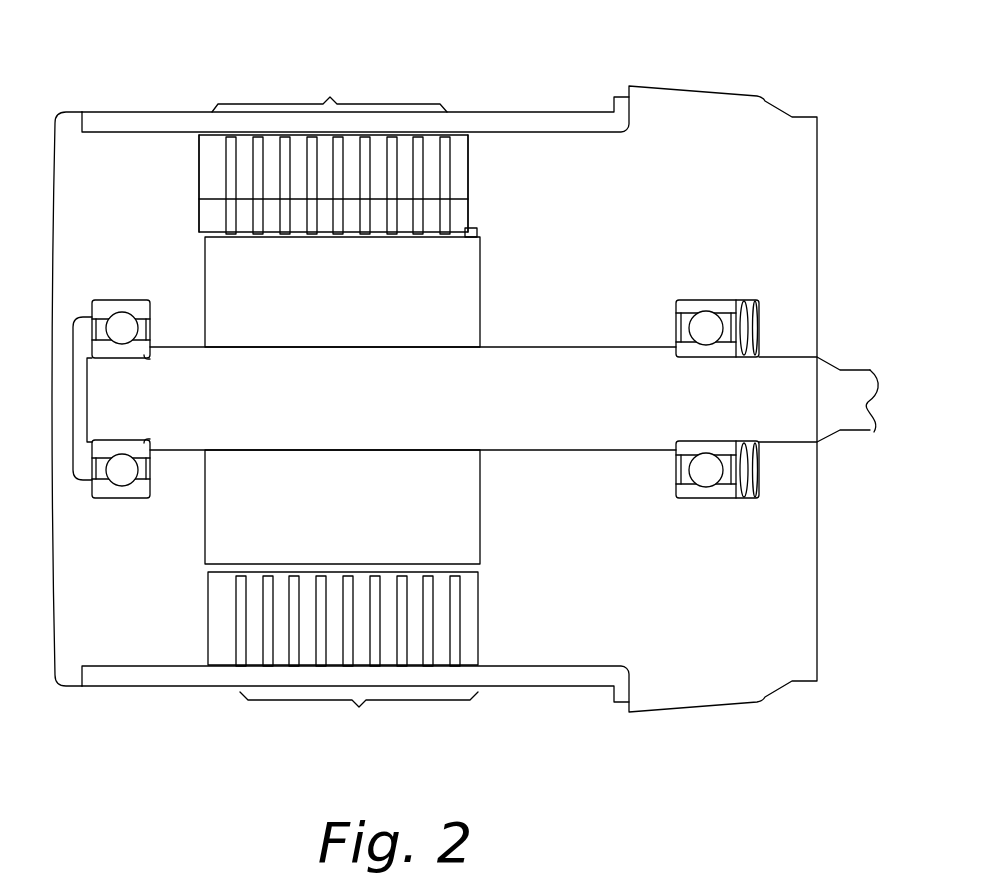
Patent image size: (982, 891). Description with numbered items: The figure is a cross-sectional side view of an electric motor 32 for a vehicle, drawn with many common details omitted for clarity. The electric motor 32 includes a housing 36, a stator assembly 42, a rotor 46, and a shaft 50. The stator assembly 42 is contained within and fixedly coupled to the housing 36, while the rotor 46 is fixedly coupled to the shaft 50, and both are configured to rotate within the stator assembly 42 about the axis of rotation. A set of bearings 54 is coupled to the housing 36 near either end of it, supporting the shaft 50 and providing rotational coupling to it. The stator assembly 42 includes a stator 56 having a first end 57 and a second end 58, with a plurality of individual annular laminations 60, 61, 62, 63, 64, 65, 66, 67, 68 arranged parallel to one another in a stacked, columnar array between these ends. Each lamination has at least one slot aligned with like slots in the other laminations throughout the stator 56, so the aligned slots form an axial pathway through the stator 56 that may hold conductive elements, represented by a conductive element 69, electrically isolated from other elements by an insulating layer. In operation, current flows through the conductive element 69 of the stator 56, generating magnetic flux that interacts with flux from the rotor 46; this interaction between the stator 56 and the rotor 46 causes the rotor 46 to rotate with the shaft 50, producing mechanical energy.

The electric motor 32 is at (538, 60).
The housing 36 is at (183, 123).
The stator assembly 42 is at (210, 177).
The rotor 46 is at (464, 322).
The shaft 50 is at (857, 377).
The bearings 54 is at (702, 322).
The stator 56 is at (345, 405).
The first end 57 is at (503, 216).
The second end 58 is at (142, 177).
The annular lamination 60 is at (444, 233).
The annular lamination 61 is at (418, 233).
The annular lamination 62 is at (391, 233).
The annular lamination 63 is at (365, 233).
The annular lamination 64 is at (338, 233).
The annular lamination 65 is at (312, 233).
The annular lamination 66 is at (285, 233).
The annular lamination 67 is at (259, 233).
The annular lamination 68 is at (229, 233).
The conductive element 69 is at (210, 203).